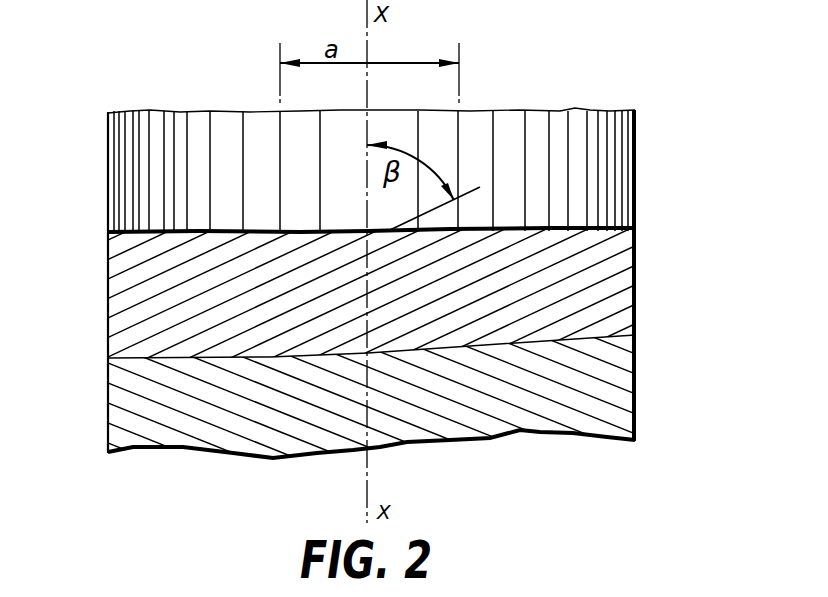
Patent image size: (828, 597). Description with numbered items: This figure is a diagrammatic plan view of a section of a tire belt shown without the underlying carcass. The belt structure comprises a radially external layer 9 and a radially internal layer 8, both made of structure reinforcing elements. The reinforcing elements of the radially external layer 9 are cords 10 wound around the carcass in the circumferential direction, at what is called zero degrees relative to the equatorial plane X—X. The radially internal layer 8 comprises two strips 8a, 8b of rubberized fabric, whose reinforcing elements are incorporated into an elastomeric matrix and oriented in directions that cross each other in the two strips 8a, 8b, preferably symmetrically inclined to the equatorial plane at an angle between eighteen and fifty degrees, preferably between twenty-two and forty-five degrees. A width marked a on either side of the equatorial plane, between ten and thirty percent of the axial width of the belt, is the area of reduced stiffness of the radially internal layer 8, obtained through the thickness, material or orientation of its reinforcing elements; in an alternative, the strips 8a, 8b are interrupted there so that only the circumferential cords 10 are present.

The radially internal layer 8 is at (418, 298).
The strip of rubberized fabric 8a is at (595, 262).
The strip of rubberized fabric 8b is at (605, 375).
The radially external layer 9 is at (365, 280).
The cords 10 is at (243, 160).